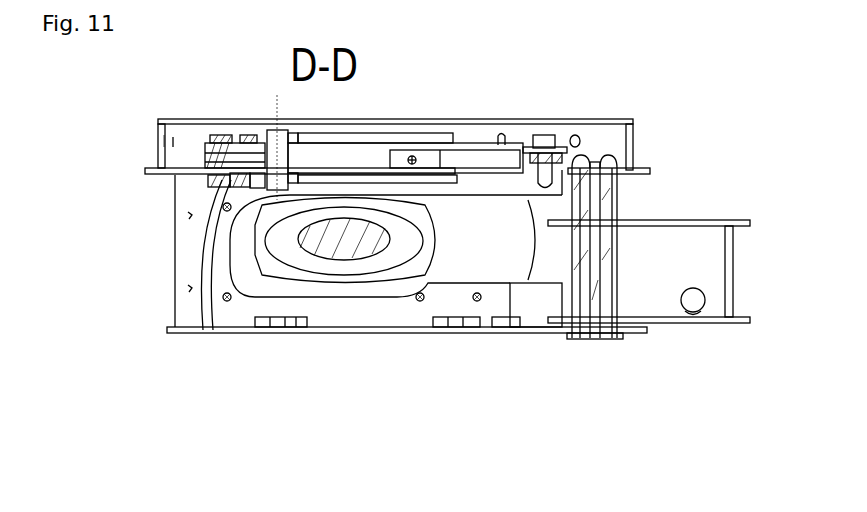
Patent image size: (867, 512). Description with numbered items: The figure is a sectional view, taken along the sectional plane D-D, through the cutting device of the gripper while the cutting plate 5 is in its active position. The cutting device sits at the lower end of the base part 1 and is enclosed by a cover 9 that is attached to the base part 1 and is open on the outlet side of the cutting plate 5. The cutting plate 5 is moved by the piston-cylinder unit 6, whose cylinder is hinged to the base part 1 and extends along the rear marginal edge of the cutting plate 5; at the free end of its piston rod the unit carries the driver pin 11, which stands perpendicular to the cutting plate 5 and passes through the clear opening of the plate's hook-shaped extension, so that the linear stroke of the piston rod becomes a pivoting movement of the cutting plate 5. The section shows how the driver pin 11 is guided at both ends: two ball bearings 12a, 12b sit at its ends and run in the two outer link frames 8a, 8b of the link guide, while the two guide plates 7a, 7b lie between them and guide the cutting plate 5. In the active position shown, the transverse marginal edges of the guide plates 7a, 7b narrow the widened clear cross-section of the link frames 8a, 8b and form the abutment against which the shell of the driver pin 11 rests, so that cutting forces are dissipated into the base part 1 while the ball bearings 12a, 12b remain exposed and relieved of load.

The base part 1 is at (349, 368).
The cutting plate 5 is at (203, 155).
The piston-cylinder unit 6 is at (356, 152).
The guide plate 7a is at (220, 182).
The guide plate 7b is at (234, 137).
The outer link frame 8a is at (237, 184).
The outer link frame 8b is at (246, 136).
The cover 9 is at (600, 120).
The driver pin 11 is at (268, 130).
The ball bearing 12a is at (240, 188).
The ball bearing 12b is at (292, 135).